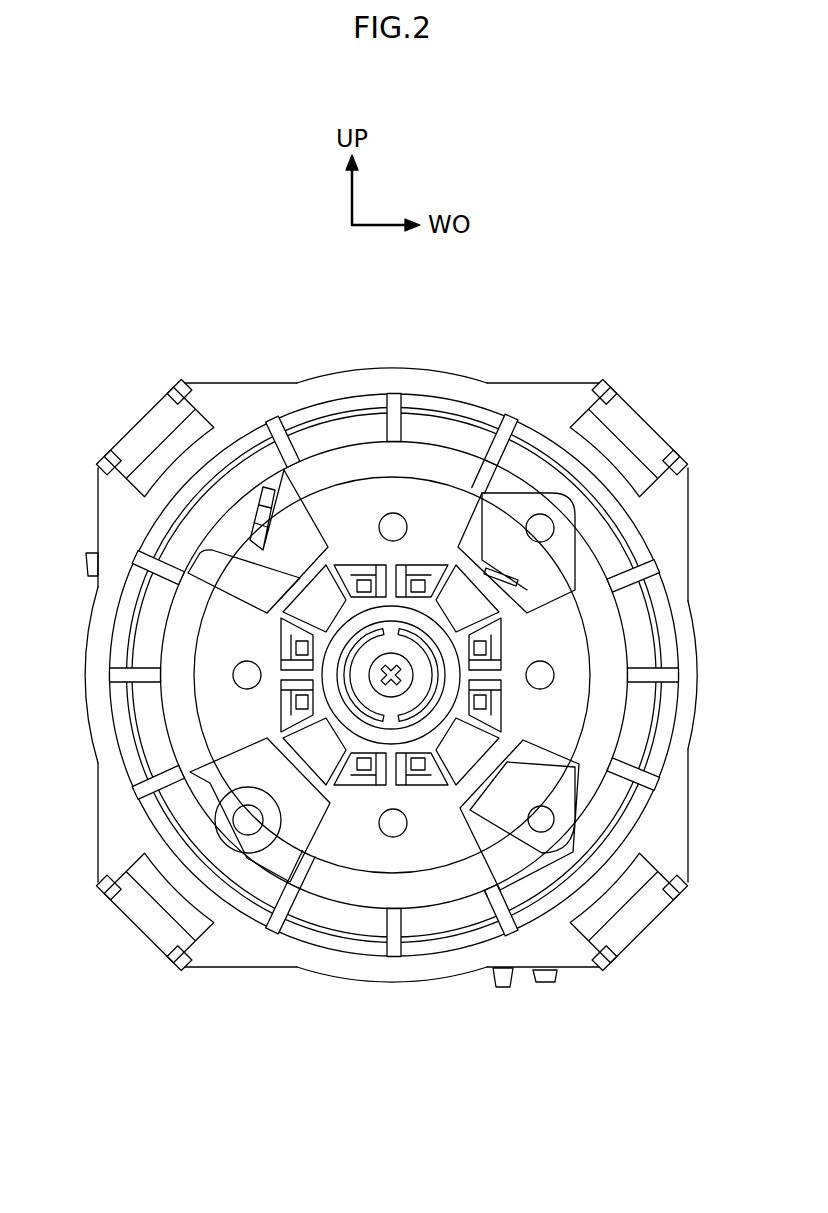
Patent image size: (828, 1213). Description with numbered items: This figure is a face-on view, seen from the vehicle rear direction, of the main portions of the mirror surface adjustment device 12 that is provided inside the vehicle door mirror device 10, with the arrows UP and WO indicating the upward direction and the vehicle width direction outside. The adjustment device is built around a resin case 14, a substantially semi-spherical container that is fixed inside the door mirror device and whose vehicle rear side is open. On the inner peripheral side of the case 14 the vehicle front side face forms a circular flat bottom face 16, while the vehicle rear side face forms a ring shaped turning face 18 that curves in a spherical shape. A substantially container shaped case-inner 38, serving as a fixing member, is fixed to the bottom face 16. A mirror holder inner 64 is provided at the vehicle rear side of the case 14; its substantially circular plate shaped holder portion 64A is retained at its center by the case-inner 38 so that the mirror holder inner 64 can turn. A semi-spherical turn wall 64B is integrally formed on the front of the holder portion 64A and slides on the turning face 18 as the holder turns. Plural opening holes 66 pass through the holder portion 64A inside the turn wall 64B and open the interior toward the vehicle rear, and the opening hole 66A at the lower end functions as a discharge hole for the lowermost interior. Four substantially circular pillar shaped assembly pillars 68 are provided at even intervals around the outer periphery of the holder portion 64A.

The vehicle door mirror device 10 is at (387, 685).
The mirror surface adjustment device 12 is at (361, 617).
The case 14 is at (275, 452).
The bottom face 16 is at (507, 480).
The turning face 18 is at (340, 432).
The case-inner 38 is at (566, 557).
The mirror holder inner 64 is at (475, 369).
The holder portion 64A is at (312, 975).
The turn wall 64B is at (460, 950).
The opening holes 66 is at (393, 645).
The opening hole 66A is at (405, 930).
The assembly pillars 68 is at (392, 659).